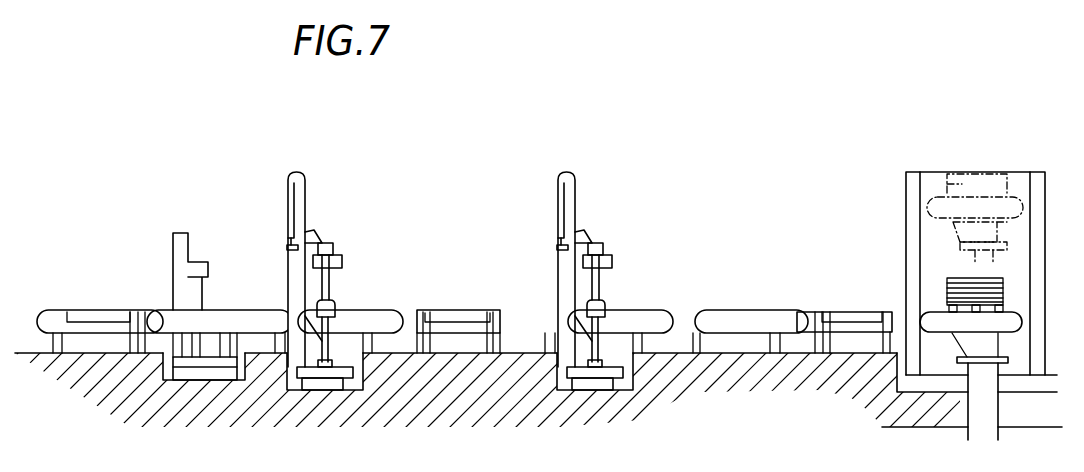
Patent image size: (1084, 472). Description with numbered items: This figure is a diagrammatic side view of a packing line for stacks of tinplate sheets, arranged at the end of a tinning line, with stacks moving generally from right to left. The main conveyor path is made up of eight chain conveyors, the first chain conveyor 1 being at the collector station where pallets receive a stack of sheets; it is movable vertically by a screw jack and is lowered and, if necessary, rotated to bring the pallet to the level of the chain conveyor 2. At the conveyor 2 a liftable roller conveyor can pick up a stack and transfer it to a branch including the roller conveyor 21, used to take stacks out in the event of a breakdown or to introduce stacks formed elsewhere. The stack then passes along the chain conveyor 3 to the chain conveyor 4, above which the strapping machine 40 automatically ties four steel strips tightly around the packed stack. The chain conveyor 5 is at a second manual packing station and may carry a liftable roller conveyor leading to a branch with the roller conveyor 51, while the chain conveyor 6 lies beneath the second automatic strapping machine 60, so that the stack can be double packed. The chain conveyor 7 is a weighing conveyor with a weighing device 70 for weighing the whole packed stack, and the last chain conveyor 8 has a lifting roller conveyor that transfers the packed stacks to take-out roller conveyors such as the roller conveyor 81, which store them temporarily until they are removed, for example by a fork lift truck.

The first chain conveyor 1 is at (1008, 322).
The chain conveyor 2 is at (862, 325).
The roller conveyor 21 is at (838, 312).
The chain conveyor 3 is at (753, 319).
The chain conveyor 4 is at (643, 313).
The strapping machine 40 is at (573, 206).
The chain conveyor 5 is at (476, 324).
The roller conveyor 51 is at (455, 313).
The chain conveyor 6 is at (371, 313).
The second automatic strapping machine 60 is at (303, 218).
The weighing conveyor 7 is at (233, 313).
The weighing device 70 is at (183, 270).
The last chain conveyor 8 is at (122, 327).
The roller conveyor 81 is at (90, 313).